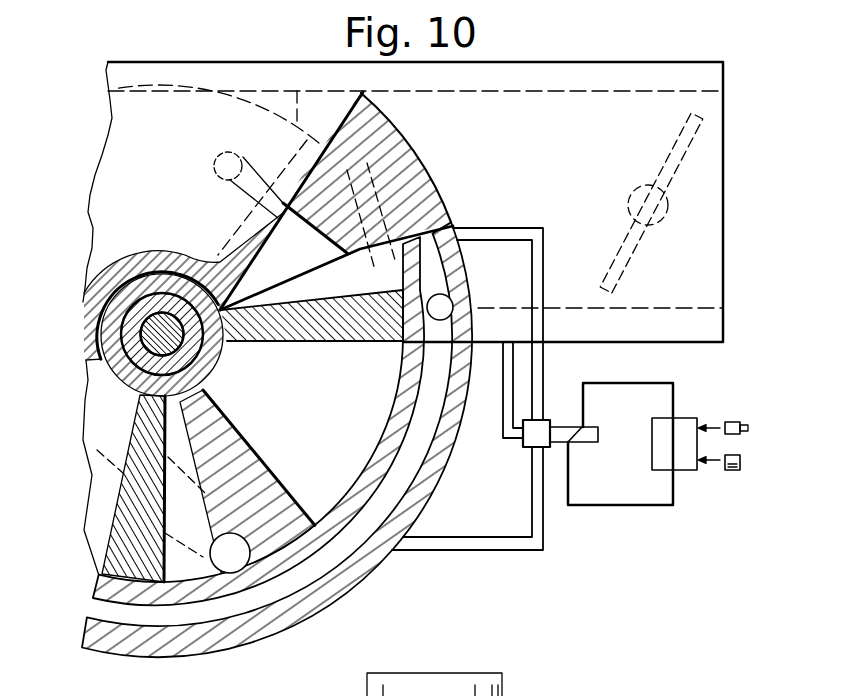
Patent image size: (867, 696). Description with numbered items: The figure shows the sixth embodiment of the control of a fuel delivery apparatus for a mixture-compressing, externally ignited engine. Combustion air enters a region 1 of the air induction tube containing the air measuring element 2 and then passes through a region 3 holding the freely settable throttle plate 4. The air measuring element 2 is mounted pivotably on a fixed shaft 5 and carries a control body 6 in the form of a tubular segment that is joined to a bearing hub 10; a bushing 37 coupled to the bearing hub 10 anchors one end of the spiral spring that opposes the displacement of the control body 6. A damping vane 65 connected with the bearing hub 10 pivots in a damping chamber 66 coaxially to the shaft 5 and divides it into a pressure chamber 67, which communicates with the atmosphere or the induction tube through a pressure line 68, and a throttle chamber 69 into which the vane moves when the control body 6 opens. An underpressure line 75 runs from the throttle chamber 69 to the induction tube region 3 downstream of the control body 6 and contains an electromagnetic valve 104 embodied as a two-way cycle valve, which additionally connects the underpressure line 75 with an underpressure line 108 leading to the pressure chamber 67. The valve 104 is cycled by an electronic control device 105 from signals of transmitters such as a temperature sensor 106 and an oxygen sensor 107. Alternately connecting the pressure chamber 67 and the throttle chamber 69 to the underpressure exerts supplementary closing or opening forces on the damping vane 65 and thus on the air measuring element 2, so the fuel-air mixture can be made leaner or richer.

The region of the air induction tube 1 is at (140, 105).
The air measuring element 2 is at (143, 238).
The region of the induction tube 3 is at (596, 93).
The throttle plate 4 is at (683, 139).
The fixed shaft 5 is at (165, 322).
The control body 6 is at (348, 192).
The bearing hub 10 is at (133, 290).
The bushing 37 is at (190, 352).
The damping vane 65 is at (337, 330).
The damping chamber 66 is at (297, 403).
The pressure chamber 67 is at (362, 272).
The pressure line 68 is at (283, 217).
The throttle chamber 69 is at (352, 447).
The underpressure line 75 is at (505, 405).
The electromagnetic valve 104 is at (586, 436).
The electronic control device 105 is at (666, 428).
The temperature sensor 106 is at (733, 471).
The oxygen sensor 107 is at (733, 420).
The underpressure line 108 is at (512, 236).